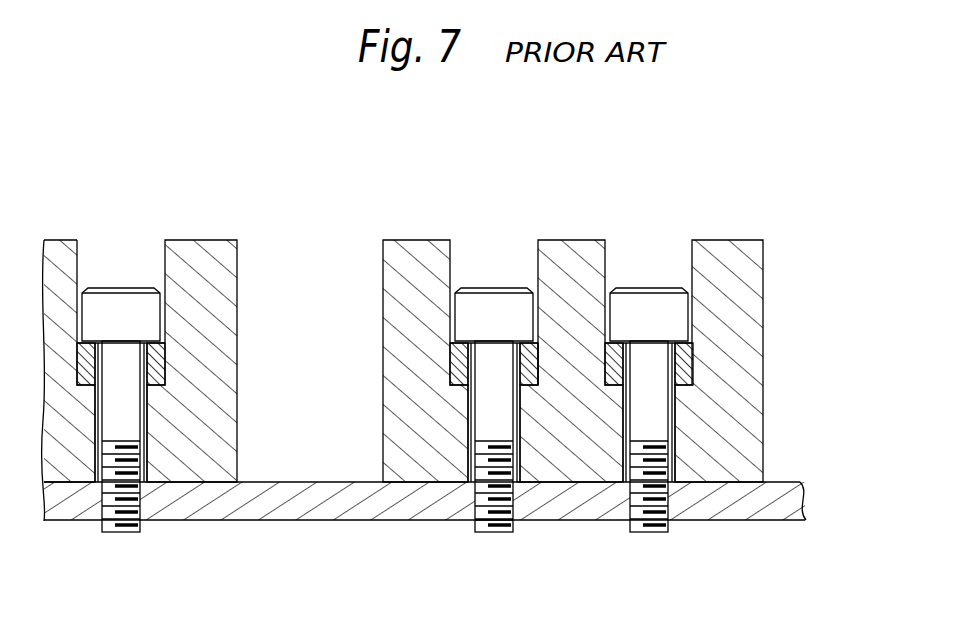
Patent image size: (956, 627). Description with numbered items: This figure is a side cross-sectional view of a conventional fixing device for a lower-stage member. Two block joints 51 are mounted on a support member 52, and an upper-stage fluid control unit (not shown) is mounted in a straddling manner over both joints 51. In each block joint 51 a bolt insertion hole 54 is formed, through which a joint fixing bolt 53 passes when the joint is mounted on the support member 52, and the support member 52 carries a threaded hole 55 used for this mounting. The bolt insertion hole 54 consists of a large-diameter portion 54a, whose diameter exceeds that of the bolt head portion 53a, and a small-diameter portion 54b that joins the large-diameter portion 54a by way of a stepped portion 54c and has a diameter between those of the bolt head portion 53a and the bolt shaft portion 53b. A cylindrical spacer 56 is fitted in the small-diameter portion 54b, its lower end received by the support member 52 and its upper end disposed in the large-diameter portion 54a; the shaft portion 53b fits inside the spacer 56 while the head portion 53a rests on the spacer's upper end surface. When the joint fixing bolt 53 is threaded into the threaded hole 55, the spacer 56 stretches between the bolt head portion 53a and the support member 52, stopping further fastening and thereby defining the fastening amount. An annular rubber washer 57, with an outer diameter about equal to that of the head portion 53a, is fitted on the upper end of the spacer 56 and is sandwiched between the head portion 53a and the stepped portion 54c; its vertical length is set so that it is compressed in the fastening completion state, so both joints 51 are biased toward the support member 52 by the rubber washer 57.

The block joint 51 is at (215, 250).
The support member 52 is at (330, 505).
The joint fixing bolt 53 is at (385, 349).
The bolt head portion 53a is at (466, 310).
The bolt shaft portion 53b is at (483, 418).
The bolt insertion hole 54 is at (385, 380).
The large-diameter portion 54a is at (409, 275).
The small-diameter portion 54b is at (464, 395).
The stepped portion 54c is at (452, 372).
The threaded hole 55 is at (490, 520).
The cylindrical spacer 56 is at (526, 435).
The annular rubber washer 57 is at (540, 352).